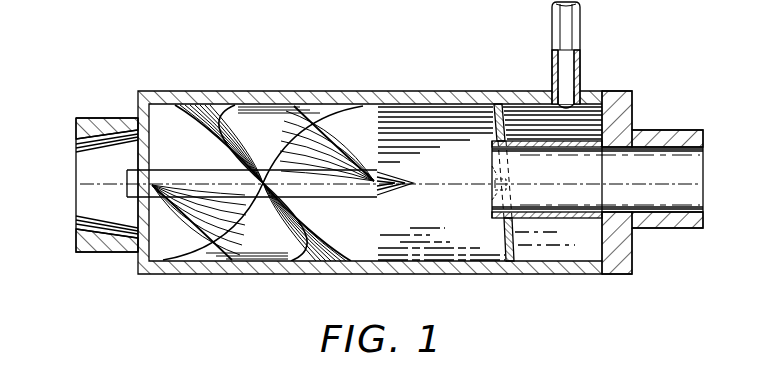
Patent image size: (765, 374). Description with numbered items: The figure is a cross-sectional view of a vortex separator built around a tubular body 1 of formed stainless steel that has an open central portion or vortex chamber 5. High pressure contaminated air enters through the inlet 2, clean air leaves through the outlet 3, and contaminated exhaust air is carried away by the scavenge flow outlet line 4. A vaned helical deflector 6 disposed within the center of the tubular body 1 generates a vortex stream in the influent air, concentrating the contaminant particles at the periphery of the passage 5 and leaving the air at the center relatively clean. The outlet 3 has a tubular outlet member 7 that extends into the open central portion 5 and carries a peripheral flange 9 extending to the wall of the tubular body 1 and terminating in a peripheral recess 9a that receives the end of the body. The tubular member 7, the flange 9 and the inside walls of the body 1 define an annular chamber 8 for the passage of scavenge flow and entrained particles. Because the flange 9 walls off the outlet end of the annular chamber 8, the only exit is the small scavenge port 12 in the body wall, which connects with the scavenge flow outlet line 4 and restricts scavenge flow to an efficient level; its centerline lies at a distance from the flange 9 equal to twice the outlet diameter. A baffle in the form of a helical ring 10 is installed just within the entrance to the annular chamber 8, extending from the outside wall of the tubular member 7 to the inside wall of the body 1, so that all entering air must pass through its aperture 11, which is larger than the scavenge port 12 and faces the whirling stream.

The tubular body 1 is at (218, 92).
The inlet 2 is at (83, 203).
The outlet 3 is at (700, 176).
The scavenge flow outlet line 4 is at (577, 26).
The vortex chamber 5 is at (413, 232).
The vaned helical deflector 6 is at (318, 106).
The tubular outlet member 7 is at (535, 224).
The annular chamber 8 is at (584, 243).
The peripheral flange 9 is at (632, 247).
The peripheral recess 9a is at (600, 247).
The helical ring 10 is at (504, 237).
The aperture 11 is at (493, 195).
The scavenge port 12 is at (588, 103).